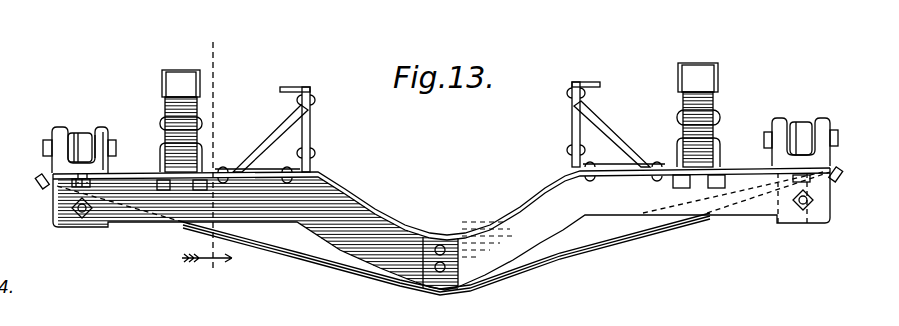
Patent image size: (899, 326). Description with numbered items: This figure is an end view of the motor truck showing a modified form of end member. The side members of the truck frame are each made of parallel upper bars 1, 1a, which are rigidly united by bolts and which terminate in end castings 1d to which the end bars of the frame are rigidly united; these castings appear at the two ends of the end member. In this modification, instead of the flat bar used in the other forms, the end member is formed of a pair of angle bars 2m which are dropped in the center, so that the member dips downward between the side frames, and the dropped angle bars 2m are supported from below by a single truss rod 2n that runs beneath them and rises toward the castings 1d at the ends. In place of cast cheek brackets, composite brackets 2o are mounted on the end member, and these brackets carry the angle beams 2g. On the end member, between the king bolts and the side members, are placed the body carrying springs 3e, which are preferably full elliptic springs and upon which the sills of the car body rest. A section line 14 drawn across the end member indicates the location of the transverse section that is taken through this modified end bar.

The upper bar 1 is at (57, 140).
The upper bar 1a is at (104, 143).
The end casting 1d is at (82, 142).
The angle beam 2g is at (298, 87).
The angle bar 2m is at (552, 196).
The truss rod 2n is at (330, 262).
The composite bracket 2o is at (311, 130).
The body carrying spring 3e is at (199, 102).
The section line 14 is at (207, 161).